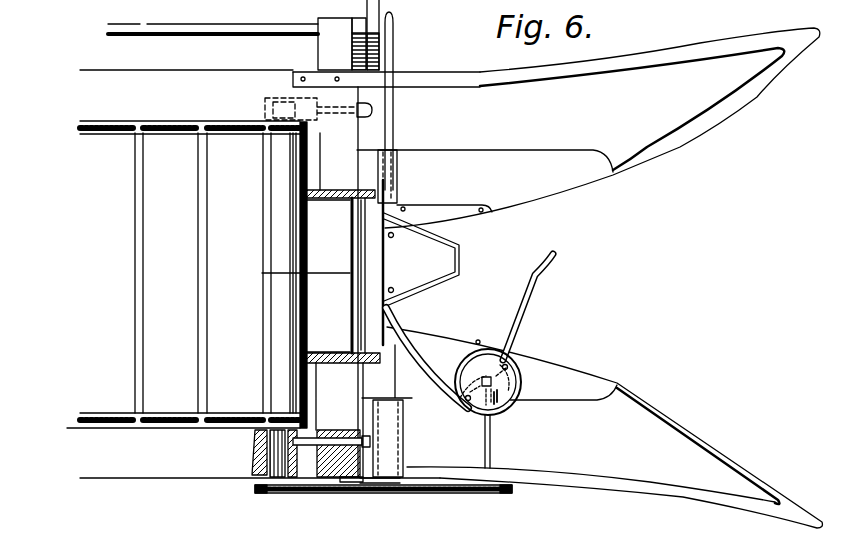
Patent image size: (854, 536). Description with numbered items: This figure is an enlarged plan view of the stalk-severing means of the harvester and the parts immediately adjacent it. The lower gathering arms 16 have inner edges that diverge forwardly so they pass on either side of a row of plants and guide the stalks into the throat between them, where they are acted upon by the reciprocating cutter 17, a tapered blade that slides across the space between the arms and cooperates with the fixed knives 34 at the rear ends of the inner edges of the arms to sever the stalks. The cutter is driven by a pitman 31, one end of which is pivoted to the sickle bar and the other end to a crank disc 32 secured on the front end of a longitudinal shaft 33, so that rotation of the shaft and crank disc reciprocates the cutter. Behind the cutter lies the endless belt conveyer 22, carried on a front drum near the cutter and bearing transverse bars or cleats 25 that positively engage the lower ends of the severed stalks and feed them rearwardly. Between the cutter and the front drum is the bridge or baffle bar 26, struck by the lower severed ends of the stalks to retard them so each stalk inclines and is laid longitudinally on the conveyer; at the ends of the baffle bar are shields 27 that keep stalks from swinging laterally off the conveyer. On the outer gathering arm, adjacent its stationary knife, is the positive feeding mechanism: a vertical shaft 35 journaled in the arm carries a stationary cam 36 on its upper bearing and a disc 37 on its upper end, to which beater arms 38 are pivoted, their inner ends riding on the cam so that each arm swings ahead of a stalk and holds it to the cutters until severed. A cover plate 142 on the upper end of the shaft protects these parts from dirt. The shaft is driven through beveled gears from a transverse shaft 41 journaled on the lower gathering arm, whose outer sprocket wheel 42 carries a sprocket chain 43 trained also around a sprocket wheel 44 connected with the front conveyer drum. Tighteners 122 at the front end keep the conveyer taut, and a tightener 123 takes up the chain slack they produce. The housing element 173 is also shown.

The lower gathering arms 16 is at (557, 278).
The reciprocating cutter 17 is at (442, 257).
The endless belt conveyer 22 is at (253, 274).
The transverse bars or cleats 25 is at (200, 366).
The bridge or baffle bar 26 is at (295, 274).
The shields 27 is at (351, 282).
The pitman 31 is at (393, 130).
The crank disc 32 is at (382, 62).
The longitudinal shaft 33 is at (218, 32).
The fixed knives 34 is at (437, 330).
The vertical shaft 35 is at (498, 385).
The stationary cam 36 is at (517, 334).
The disc 37 is at (512, 410).
The beater arms 38 is at (531, 294).
The transverse shaft 41 is at (491, 448).
The sprocket wheel 42 is at (513, 490).
The sprocket chain 43 is at (447, 494).
The sprocket wheel 44 is at (258, 491).
The tighteners 122 is at (313, 443).
The tightener 123 is at (371, 495).
The cover plate 142 is at (473, 406).
The housing 173 is at (365, 297).